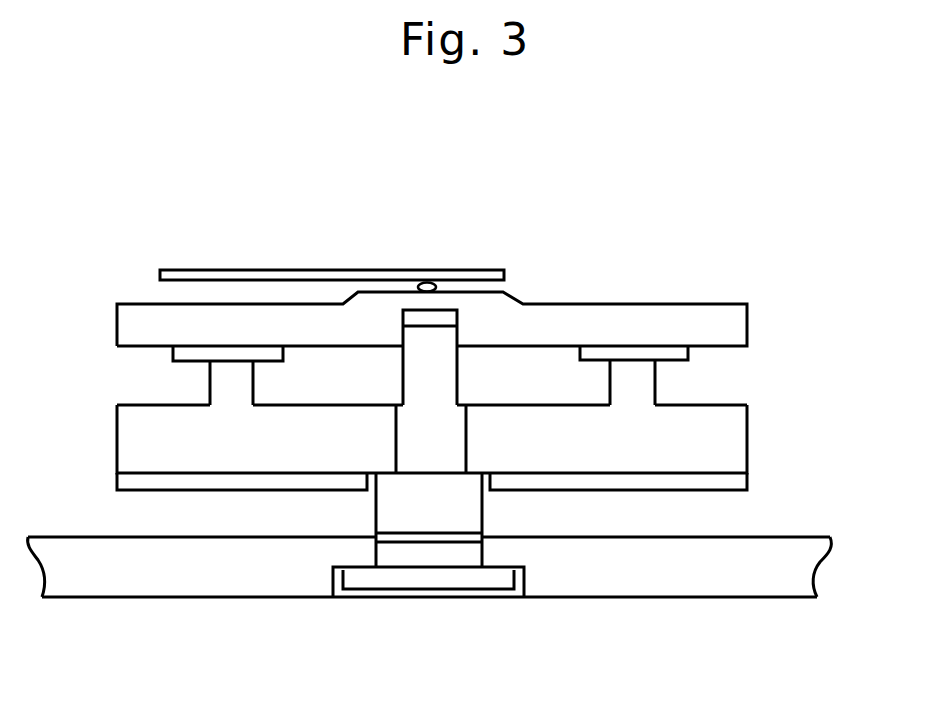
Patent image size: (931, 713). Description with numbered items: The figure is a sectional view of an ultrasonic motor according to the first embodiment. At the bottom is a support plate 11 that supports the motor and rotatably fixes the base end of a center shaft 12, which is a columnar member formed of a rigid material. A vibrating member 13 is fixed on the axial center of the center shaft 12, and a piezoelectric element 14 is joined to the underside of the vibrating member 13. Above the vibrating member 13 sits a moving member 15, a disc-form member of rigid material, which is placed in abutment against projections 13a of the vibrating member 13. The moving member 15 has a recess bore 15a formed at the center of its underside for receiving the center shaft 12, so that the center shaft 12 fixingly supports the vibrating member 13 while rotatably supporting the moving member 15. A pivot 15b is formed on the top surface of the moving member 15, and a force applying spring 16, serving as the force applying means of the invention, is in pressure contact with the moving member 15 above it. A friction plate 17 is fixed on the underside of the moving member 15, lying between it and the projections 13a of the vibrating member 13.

The support plate 11 is at (747, 582).
The center shaft 12 is at (498, 578).
The vibrating member 13 is at (727, 438).
The projections 13a is at (643, 382).
The piezoelectric element 14 is at (737, 482).
The moving member 15 is at (737, 320).
The recess bore 15a is at (457, 330).
The pivot 15b is at (422, 282).
The force applying spring 16 is at (500, 279).
The friction plate 17 is at (667, 355).